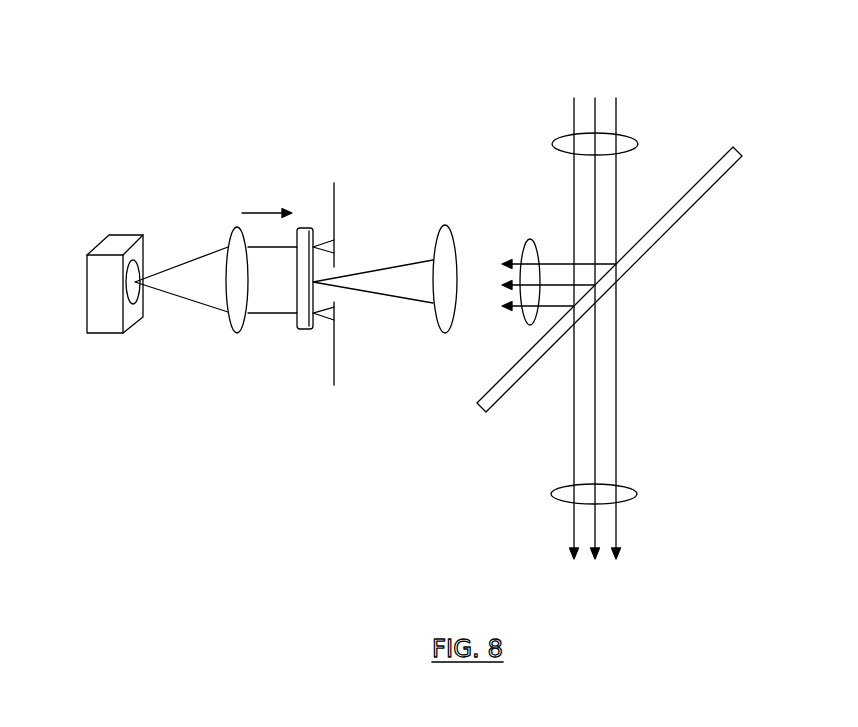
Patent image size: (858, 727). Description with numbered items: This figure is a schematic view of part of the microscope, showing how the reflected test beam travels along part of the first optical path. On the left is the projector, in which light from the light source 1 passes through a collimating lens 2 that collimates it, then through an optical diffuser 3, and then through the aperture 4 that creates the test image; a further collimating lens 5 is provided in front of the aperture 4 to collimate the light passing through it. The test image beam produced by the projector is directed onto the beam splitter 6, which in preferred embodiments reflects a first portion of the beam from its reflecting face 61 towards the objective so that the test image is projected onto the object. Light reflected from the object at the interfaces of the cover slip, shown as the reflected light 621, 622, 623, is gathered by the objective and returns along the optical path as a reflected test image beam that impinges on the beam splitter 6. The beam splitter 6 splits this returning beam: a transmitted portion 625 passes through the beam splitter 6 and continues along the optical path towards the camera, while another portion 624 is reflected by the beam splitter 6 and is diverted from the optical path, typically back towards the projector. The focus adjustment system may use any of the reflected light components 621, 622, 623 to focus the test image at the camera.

The light source 1 is at (117, 243).
The collimating lens 2 is at (237, 331).
The optical diffuser 3 is at (300, 332).
The aperture 4 is at (334, 363).
The collimating lens 5 is at (445, 225).
The beam splitter 6 is at (602, 320).
The reflecting face 61 is at (500, 379).
The reflected light 621 is at (686, 104).
The reflected light 622 is at (686, 104).
The reflected light 623 is at (637, 142).
The reflected portion of reflected test image beam 624 is at (530, 238).
The transmitted portion of reflected test image beam 625 is at (630, 500).